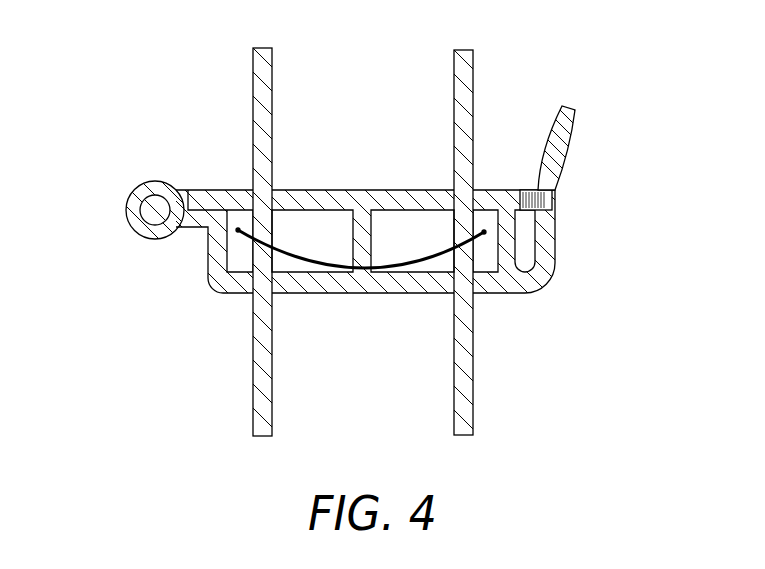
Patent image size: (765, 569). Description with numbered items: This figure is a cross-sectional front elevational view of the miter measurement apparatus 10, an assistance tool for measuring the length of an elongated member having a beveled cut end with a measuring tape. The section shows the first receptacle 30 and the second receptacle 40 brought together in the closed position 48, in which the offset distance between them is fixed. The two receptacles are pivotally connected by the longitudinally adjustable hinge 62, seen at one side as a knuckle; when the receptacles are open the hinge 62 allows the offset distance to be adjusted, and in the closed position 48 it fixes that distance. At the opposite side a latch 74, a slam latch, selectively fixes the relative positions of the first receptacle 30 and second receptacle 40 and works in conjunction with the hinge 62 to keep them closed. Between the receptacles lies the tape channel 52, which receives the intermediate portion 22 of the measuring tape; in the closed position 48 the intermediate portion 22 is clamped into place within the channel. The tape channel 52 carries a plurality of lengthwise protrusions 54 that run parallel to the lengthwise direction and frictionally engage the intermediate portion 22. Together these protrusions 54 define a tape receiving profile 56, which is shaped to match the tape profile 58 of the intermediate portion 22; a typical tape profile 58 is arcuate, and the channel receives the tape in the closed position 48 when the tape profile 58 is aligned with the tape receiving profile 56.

The miter measurement apparatus 10 is at (367, 252).
The intermediate portion 22 is at (359, 298).
The first receptacle 30 is at (463, 305).
The second receptacle 40 is at (255, 165).
The closed position 48 is at (499, 439).
The tape channel 52 is at (412, 241).
The lengthwise protrusions 54 is at (456, 235).
The tape receiving profile 56 is at (359, 298).
The tape profile 58 is at (283, 255).
The longitudinally adjustable hinge 62 is at (132, 227).
The latch 74 is at (556, 200).